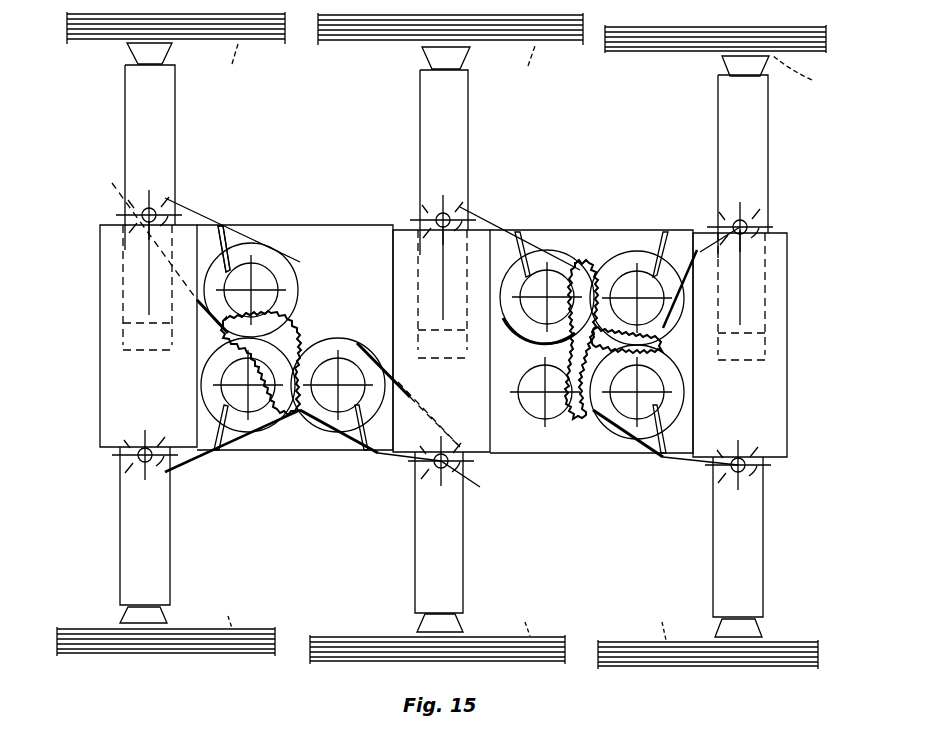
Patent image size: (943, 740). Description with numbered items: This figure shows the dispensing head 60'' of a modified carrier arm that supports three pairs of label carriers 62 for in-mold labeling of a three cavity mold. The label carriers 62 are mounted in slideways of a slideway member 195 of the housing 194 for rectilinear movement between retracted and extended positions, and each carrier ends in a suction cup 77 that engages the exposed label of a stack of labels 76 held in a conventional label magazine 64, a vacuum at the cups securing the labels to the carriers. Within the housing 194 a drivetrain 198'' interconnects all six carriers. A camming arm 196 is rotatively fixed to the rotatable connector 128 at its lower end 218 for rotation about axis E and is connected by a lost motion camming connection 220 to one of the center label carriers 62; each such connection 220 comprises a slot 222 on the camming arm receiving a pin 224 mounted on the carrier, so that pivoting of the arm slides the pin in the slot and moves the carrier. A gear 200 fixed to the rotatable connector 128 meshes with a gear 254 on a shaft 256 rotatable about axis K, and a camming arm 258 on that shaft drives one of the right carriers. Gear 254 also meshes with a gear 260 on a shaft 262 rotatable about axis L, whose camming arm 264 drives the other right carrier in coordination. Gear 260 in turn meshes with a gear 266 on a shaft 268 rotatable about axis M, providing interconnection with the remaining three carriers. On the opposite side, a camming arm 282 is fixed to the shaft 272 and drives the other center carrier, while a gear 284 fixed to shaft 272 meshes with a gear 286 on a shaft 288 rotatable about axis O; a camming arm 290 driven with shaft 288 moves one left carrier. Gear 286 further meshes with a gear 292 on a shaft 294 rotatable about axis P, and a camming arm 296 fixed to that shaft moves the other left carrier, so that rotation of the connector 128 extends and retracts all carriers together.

The label magazine 64 is at (285, 45).
The labels 76 is at (515, 342).
The suction cups 77 is at (140, 50).
The label carrier 62 is at (176, 128).
The lost motion camming connection 220 is at (130, 203).
The slideway member 195 is at (108, 456).
The housing 194 is at (331, 215).
The drivetrain 198'' is at (591, 303).
The camming arm 296 is at (222, 230).
The axis P is at (254, 288).
The shaft 294 is at (278, 262).
The gear 292 is at (272, 284).
The gear 286 is at (270, 335).
The gear 284 is at (296, 326).
The shaft 272 is at (342, 365).
The camming arm 290 is at (222, 410).
The shaft 288 is at (292, 415).
The camming arm 282 is at (352, 420).
The axis O is at (249, 390).
The roller N is at (336, 392).
The pin 224 is at (466, 203).
The slot 222 is at (470, 216).
The lower end 218 is at (560, 265).
The rotatable connector 128 is at (584, 262).
The gear 254 is at (648, 280).
The camming arm 258 is at (700, 245).
The camming arm 196 is at (552, 290).
The axis E is at (592, 260).
The gear 200 is at (604, 268).
The shaft 256 is at (666, 300).
The axis K is at (638, 341).
The gear 260 is at (668, 352).
The axis M is at (548, 420).
The axis L is at (630, 420).
The shaft 268 is at (528, 430).
The shaft 262 is at (622, 430).
The camming arm 264 is at (664, 455).
The gear 266 is at (580, 422).
The dispensing head 60'' is at (306, 552).